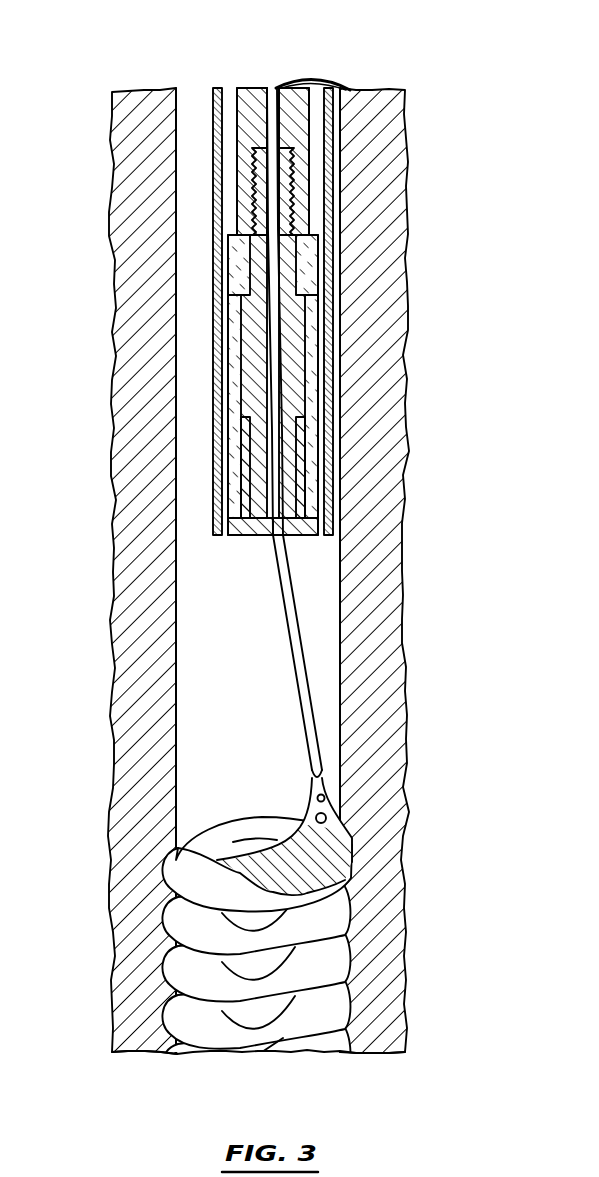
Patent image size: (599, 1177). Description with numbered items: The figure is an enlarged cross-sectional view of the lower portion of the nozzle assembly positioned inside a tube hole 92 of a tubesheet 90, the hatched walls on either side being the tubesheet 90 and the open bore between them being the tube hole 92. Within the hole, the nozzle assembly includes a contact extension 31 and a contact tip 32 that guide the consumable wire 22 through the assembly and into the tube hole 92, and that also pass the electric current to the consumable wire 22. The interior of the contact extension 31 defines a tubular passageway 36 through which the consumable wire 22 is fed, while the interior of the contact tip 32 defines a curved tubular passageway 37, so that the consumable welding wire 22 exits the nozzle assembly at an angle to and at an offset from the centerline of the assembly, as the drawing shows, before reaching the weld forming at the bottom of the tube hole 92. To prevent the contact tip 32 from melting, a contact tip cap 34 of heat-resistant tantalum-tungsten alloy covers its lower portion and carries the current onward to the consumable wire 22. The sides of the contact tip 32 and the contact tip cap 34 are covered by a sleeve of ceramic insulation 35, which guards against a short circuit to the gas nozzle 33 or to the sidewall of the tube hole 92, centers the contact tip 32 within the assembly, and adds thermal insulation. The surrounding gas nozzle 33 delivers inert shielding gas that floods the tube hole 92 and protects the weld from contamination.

The consumable wire 22 is at (320, 720).
The contact extension 31 is at (310, 137).
The contact tip 32 is at (302, 398).
The gas nozzle 33 is at (213, 185).
The contact tip cap 34 is at (262, 535).
The sleeve of ceramic insulation 35 is at (229, 416).
The tubular passageway 36 is at (273, 97).
The curved tubular passageway 37 is at (283, 458).
The tubesheet 90 is at (378, 603).
The tube hole 92 is at (205, 712).